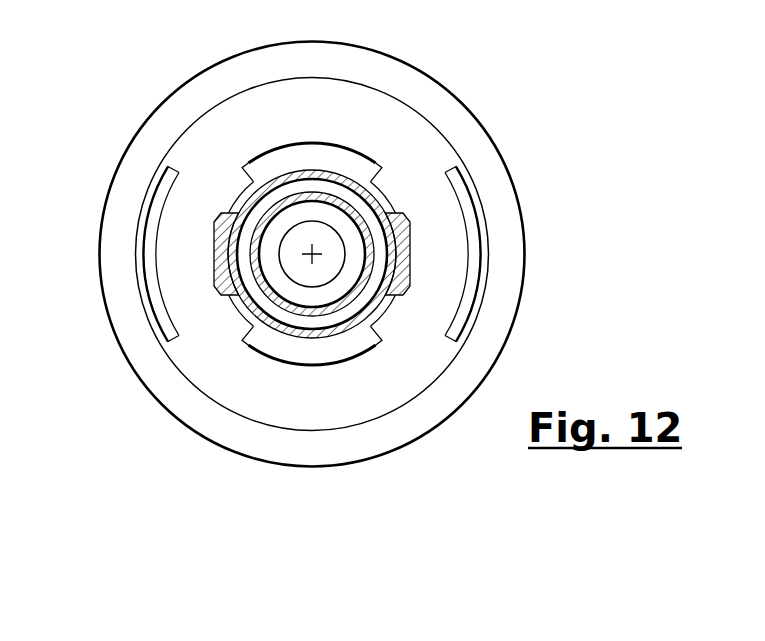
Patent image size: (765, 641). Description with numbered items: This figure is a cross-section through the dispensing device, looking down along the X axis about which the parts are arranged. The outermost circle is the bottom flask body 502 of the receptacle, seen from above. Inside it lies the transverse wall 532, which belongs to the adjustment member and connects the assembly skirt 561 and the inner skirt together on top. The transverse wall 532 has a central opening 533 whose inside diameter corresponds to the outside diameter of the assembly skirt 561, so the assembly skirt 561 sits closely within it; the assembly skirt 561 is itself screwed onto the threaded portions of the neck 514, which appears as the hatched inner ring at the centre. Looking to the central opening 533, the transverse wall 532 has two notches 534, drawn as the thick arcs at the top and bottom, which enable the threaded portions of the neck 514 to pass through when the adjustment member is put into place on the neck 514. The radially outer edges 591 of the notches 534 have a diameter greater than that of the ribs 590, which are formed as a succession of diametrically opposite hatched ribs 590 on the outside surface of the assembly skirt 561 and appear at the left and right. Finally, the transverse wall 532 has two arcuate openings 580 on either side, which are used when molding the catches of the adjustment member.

The bottom flask body 502 is at (508, 295).
The transverse wall 532 is at (228, 114).
The openings 580 is at (465, 203).
The ribs 590 is at (410, 238).
The notches 534 is at (283, 160).
The central opening 533 is at (240, 318).
The radially outer edges 591 is at (249, 160).
The assembly skirt 561 is at (373, 160).
The neck 514 is at (347, 300).
The X axis X is at (312, 254).